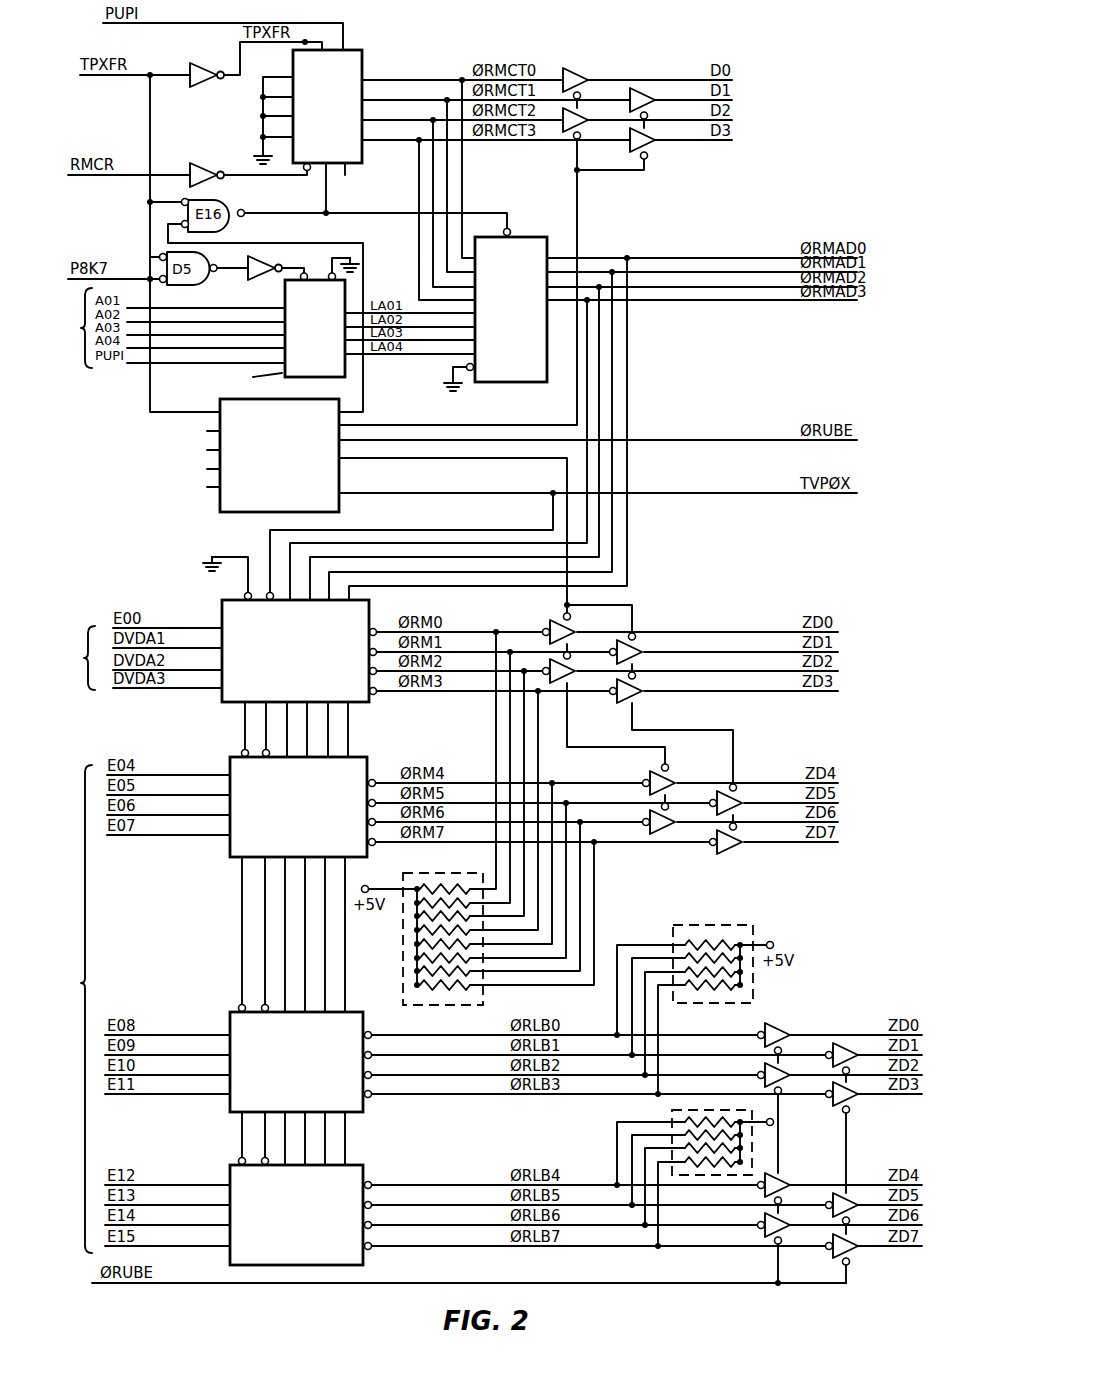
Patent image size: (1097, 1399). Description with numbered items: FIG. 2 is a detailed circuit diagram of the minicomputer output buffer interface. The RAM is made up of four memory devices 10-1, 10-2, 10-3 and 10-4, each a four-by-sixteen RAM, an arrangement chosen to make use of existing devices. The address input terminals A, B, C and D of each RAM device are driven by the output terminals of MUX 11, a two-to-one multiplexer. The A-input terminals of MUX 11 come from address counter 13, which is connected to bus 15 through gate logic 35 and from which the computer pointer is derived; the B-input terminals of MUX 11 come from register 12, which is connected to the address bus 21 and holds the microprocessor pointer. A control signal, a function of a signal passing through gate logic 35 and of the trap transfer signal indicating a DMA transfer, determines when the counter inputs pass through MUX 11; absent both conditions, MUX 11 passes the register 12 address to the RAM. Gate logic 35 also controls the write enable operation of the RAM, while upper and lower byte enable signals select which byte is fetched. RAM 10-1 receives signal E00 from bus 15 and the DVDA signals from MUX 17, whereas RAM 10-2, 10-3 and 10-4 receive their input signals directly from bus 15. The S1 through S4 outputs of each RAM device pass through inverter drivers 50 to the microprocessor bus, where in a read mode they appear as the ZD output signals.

The counter 13 is at (362, 57).
The register 12 is at (347, 293).
The MUX 11 is at (505, 383).
The gate logic 35 is at (217, 498).
The RAM memory device 10-1 is at (295, 651).
The RAM memory device 10-2 is at (298, 807).
The RAM memory device 10-3 is at (296, 1062).
The RAM memory device 10-4 is at (296, 1215).
The inverter drivers 50 is at (620, 698).
The address bus 21 is at (47, 340).
The MUX 17 is at (49, 660).
The bus 15 is at (49, 980).